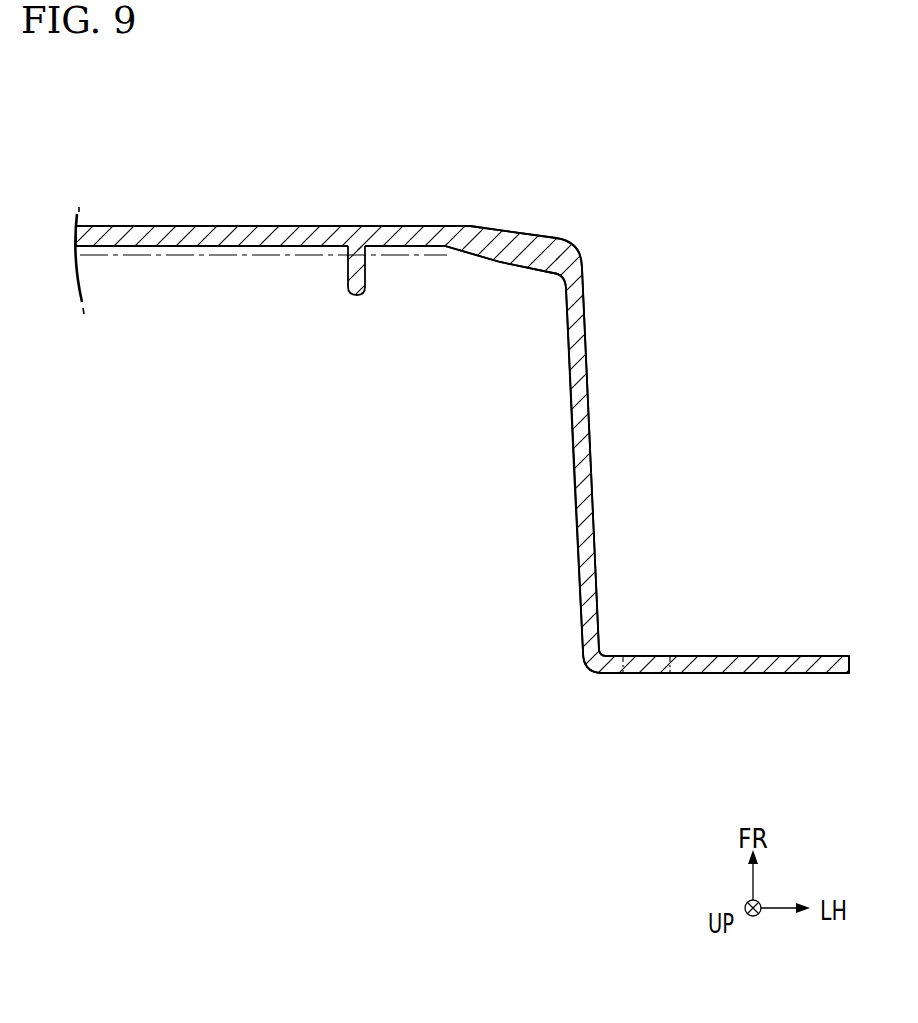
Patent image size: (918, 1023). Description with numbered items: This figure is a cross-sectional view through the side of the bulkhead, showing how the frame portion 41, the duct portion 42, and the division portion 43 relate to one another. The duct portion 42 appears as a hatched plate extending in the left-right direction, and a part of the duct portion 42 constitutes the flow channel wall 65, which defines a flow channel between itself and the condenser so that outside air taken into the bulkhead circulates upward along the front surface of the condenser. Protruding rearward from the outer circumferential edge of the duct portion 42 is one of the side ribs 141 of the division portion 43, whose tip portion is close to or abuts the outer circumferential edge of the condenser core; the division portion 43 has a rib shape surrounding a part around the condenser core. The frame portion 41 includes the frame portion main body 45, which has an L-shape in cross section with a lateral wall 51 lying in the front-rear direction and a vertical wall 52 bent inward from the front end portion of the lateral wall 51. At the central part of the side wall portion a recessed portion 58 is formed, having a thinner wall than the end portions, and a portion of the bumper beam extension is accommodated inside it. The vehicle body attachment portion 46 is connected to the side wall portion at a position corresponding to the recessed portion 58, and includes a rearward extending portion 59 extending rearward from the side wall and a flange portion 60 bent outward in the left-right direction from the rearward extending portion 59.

The frame portion 41 is at (731, 338).
The duct portion 42 is at (162, 225).
The division portion 43 is at (255, 430).
The side ribs 141 is at (358, 291).
The frame portion main body 45 is at (584, 358).
The vehicle body attachment portion 46 is at (591, 518).
The lateral wall 51 is at (571, 340).
The vertical wall 52 is at (512, 246).
The recessed portion 58 is at (583, 286).
The rearward extending portion 59 is at (582, 566).
The flange portion 60 is at (711, 673).
The flow channel wall 65 is at (96, 231).